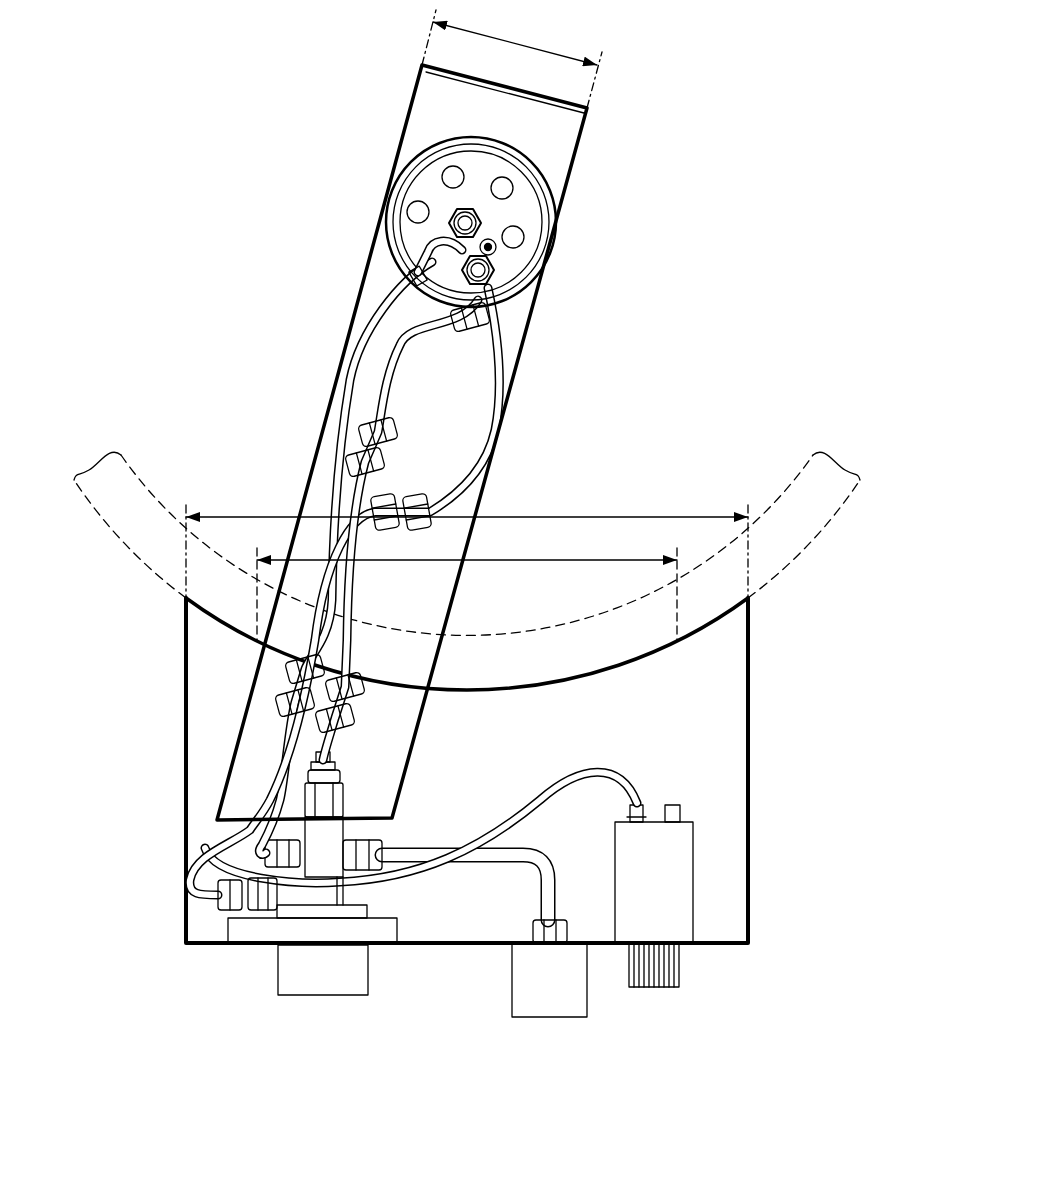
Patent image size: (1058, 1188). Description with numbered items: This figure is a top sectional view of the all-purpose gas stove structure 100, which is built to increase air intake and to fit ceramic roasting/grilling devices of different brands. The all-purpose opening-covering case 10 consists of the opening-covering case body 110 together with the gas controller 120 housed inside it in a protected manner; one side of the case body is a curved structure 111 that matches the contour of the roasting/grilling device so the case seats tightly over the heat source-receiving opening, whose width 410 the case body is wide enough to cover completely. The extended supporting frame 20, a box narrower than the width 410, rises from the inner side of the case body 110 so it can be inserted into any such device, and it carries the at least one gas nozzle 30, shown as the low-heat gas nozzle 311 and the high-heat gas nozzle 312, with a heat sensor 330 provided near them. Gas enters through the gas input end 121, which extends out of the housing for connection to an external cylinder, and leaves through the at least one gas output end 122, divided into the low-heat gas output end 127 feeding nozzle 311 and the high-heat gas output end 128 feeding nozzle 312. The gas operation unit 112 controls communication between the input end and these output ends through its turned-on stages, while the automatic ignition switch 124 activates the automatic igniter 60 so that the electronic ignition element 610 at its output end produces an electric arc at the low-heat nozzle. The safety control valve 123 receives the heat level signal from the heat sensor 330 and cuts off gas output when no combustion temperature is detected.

The all-purpose gas stove structure 100 is at (878, 38).
The all-purpose opening-covering case 10 is at (848, 833).
The opening-covering case body 110 is at (750, 915).
The curved structure 111 is at (660, 655).
The gas operation unit 112 is at (322, 1001).
The gas controller 120 is at (366, 829).
The gas input end 121 is at (553, 1005).
The gas output end 122 is at (273, 599).
The safety control valve 123 is at (320, 843).
The automatic ignition switch 124 is at (652, 988).
The low-heat gas output end 127 is at (228, 896).
The high-heat gas output end 128 is at (255, 830).
The automatic igniter 60 is at (676, 917).
The extended supporting frame 20 is at (302, 470).
The gas nozzle 30 is at (488, 235).
The low-heat gas nozzle 311 is at (492, 282).
The high-heat gas nozzle 312 is at (483, 216).
The heat sensor 330 is at (496, 250).
The electronic ignition element 610 is at (440, 245).
The width of the heat source-receiving opening 410 is at (467, 585).